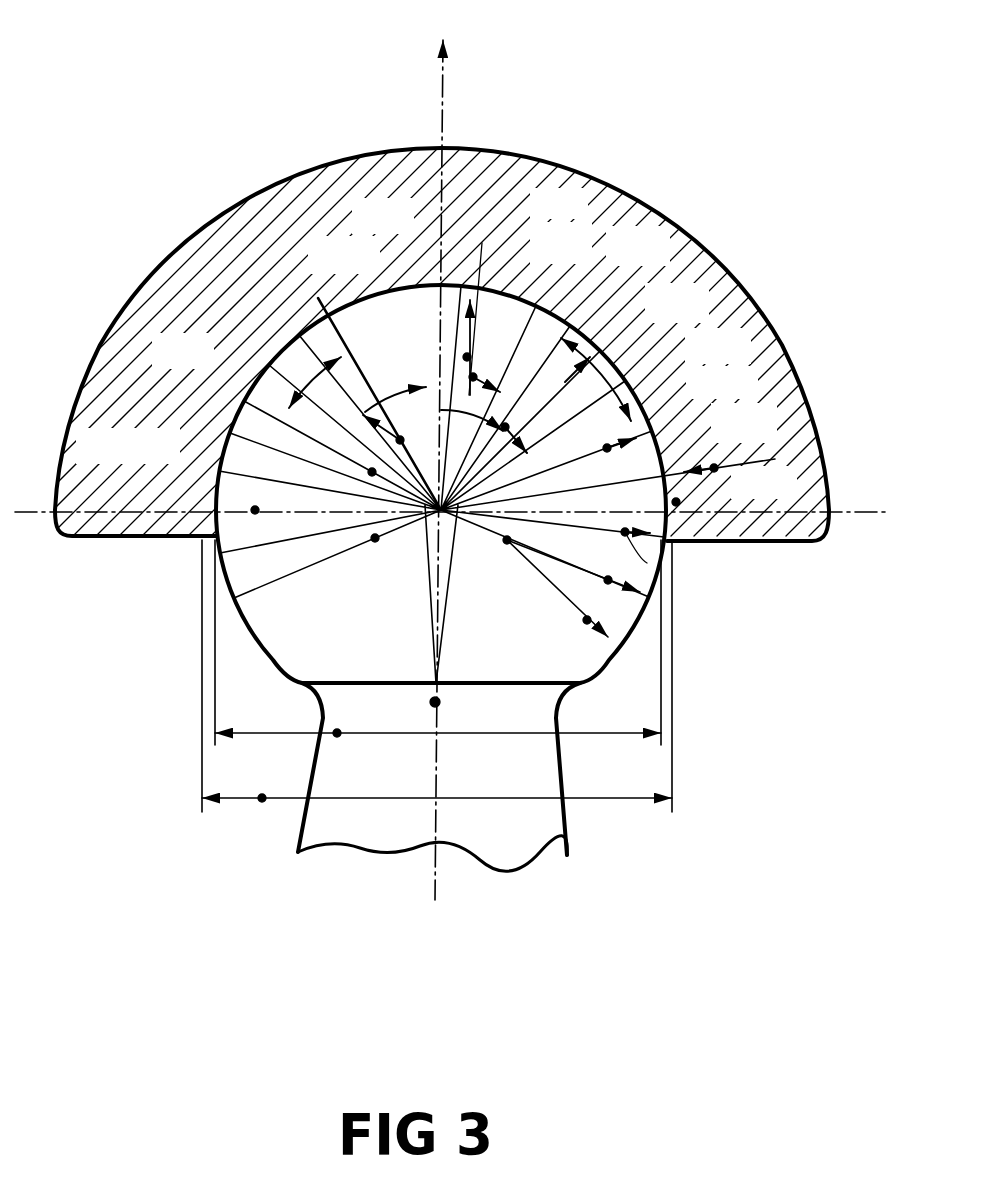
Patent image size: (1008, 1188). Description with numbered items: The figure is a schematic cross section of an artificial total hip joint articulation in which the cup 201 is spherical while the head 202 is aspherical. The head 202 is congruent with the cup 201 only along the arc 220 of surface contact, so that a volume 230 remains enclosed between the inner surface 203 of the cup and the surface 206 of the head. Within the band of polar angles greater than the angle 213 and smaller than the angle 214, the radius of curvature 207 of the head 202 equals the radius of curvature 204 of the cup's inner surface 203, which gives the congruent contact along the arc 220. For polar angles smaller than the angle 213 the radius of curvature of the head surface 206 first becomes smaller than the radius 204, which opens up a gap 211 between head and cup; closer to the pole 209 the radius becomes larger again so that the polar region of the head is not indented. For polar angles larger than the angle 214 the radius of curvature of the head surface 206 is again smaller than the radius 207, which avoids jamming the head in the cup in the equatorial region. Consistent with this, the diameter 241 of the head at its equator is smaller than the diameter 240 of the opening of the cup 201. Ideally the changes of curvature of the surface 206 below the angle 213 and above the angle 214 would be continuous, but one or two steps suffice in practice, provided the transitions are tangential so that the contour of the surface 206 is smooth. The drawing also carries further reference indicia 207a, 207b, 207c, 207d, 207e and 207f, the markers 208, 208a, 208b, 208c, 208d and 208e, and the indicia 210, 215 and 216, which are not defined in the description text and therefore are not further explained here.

The cup 201 is at (267, 223).
The head 202 is at (277, 627).
The inner surface of the cup 203 is at (676, 502).
The radius of curvature of the cup's inner surface 204 is at (764, 442).
The surface of the head 206 is at (647, 563).
The radius of curvature of the head 207 is at (626, 380).
The radial line 207a is at (600, 351).
The radial line 207b is at (482, 243).
The radial line 207c is at (750, 398).
The radial line 207d is at (662, 545).
The radial line 207e is at (608, 580).
The radial line 207f is at (587, 620).
The radial line 208 is at (430, 530).
The radial line 208a is at (372, 472).
The radial line 208b is at (435, 702).
The radial line 208c is at (480, 565).
The radial line 208d is at (255, 510).
The radial line 208e is at (560, 598).
The pole 209 is at (443, 280).
The central axis 210 is at (443, 127).
The gap 211 is at (482, 243).
The angle 213 is at (490, 335).
The angle 214 is at (565, 382).
The angle arc 215 is at (395, 398).
The angle arc 216 is at (290, 400).
The arc of the surface contact 220 is at (630, 380).
The volume 230 is at (416, 288).
The diameter of the opening of the cup 240 is at (262, 798).
The diameter of the head at its equator 241 is at (337, 733).